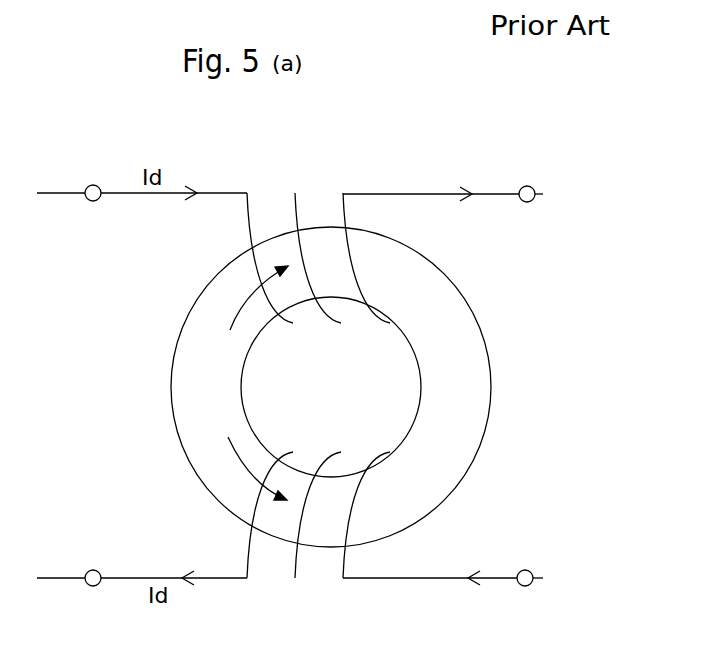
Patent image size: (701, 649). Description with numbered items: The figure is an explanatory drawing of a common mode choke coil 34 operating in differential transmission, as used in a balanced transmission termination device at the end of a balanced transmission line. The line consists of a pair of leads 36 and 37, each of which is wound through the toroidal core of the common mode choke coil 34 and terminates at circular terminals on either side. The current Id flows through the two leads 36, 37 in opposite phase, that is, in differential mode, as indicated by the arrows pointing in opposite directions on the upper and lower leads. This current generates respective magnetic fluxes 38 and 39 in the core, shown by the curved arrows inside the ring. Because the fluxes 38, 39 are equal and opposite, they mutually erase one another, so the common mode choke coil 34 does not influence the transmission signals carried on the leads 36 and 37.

The common mode choke coil 34 is at (327, 163).
The lead 36 is at (57, 193).
The lead 37 is at (55, 575).
The magnetic flux 38 is at (230, 453).
The magnetic flux 39 is at (238, 305).